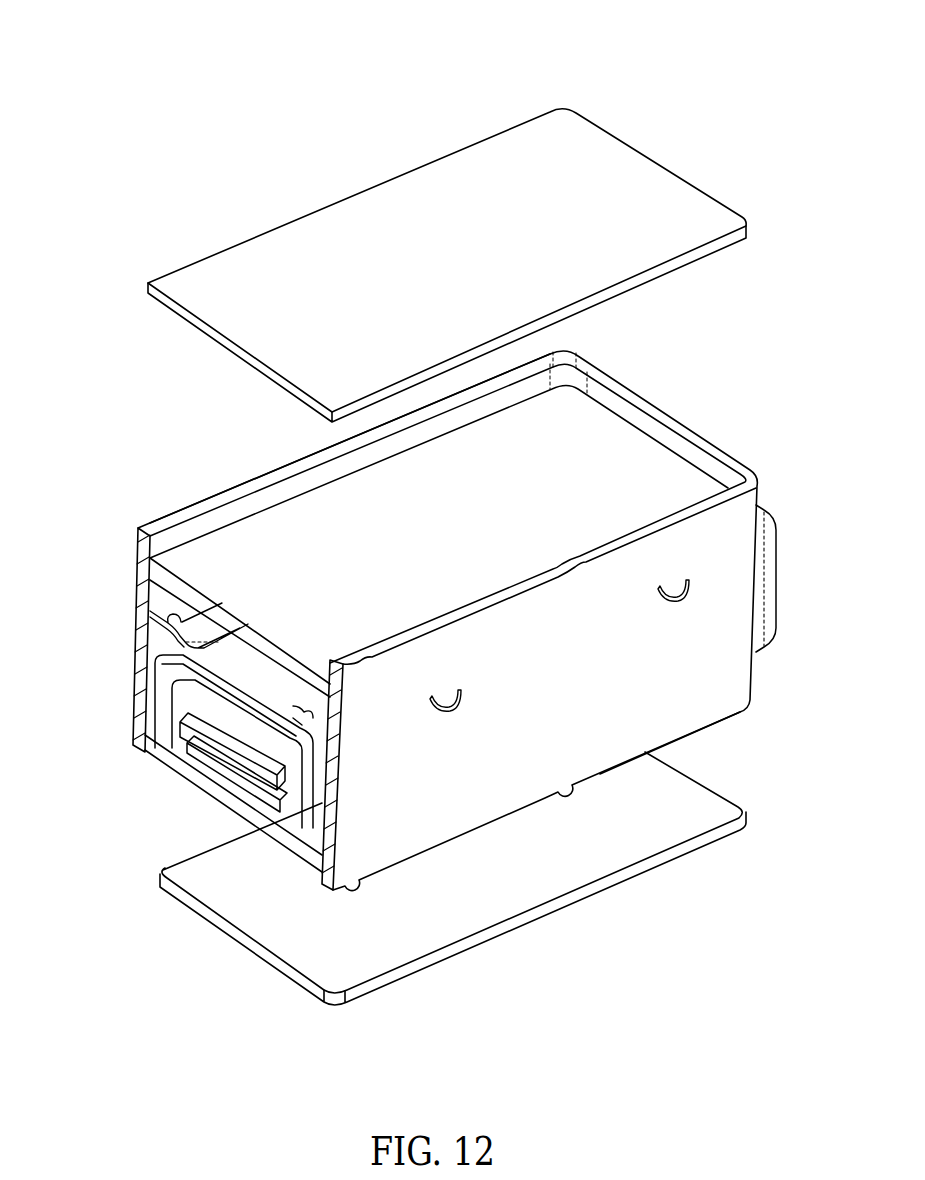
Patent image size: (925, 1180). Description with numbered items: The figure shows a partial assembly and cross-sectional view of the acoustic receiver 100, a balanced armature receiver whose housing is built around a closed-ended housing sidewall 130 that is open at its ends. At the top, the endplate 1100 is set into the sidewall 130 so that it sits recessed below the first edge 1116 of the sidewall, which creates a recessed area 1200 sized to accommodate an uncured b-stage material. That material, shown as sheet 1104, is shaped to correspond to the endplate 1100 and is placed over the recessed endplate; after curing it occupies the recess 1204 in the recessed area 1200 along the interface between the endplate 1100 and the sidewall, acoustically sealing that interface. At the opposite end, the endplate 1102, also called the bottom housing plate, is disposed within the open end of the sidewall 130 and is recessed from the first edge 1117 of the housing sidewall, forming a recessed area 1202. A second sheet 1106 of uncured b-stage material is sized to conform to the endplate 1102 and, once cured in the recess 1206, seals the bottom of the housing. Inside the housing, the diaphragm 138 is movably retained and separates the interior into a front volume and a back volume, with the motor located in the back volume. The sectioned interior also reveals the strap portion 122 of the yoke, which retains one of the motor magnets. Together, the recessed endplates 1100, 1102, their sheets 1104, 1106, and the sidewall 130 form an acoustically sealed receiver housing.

The acoustic receiver 100 is at (186, 52).
The sheet of uncured b-stage material 1104 is at (714, 221).
The sheet of uncured b-stage material 1106 is at (534, 915).
The endplate 1100 is at (625, 465).
The first edge of the sidewall 1116 is at (288, 470).
The first edge of the housing sidewall 1117 is at (711, 727).
The closed-ended housing sidewall 130 is at (733, 686).
The recessed area 1200 is at (128, 588).
The recess 1204 is at (232, 506).
The diaphragm 138 is at (205, 632).
The recessed area 1202 is at (175, 797).
The strap portion 122 is at (165, 697).
The recess 1206 is at (160, 757).
The endplate 1102 is at (236, 814).